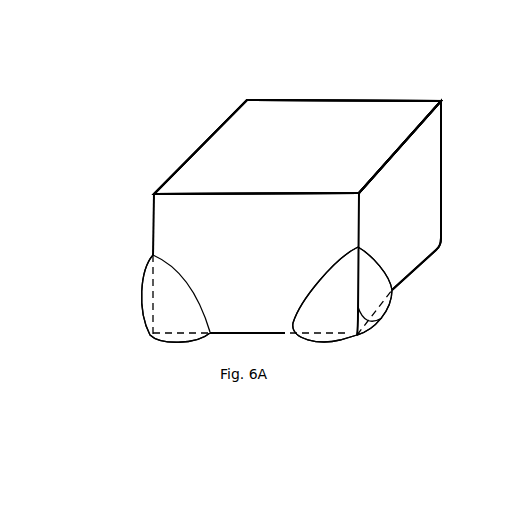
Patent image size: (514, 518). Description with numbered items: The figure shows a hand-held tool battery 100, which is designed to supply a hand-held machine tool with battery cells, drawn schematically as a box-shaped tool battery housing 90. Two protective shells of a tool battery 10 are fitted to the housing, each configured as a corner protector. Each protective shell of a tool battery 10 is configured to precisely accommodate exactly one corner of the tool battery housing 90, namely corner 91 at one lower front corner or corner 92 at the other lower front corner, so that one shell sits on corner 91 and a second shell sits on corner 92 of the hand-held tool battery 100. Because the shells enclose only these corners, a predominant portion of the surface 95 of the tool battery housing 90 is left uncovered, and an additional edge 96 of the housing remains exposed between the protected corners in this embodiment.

The hand-held tool battery 100 is at (227, 70).
The tool battery housing 90 is at (337, 150).
The surface 95 is at (240, 147).
The additional edge 96 is at (436, 195).
The corner 91 is at (153, 335).
The corner 92 is at (357, 335).
The protective shell of a tool battery 10 is at (133, 308).